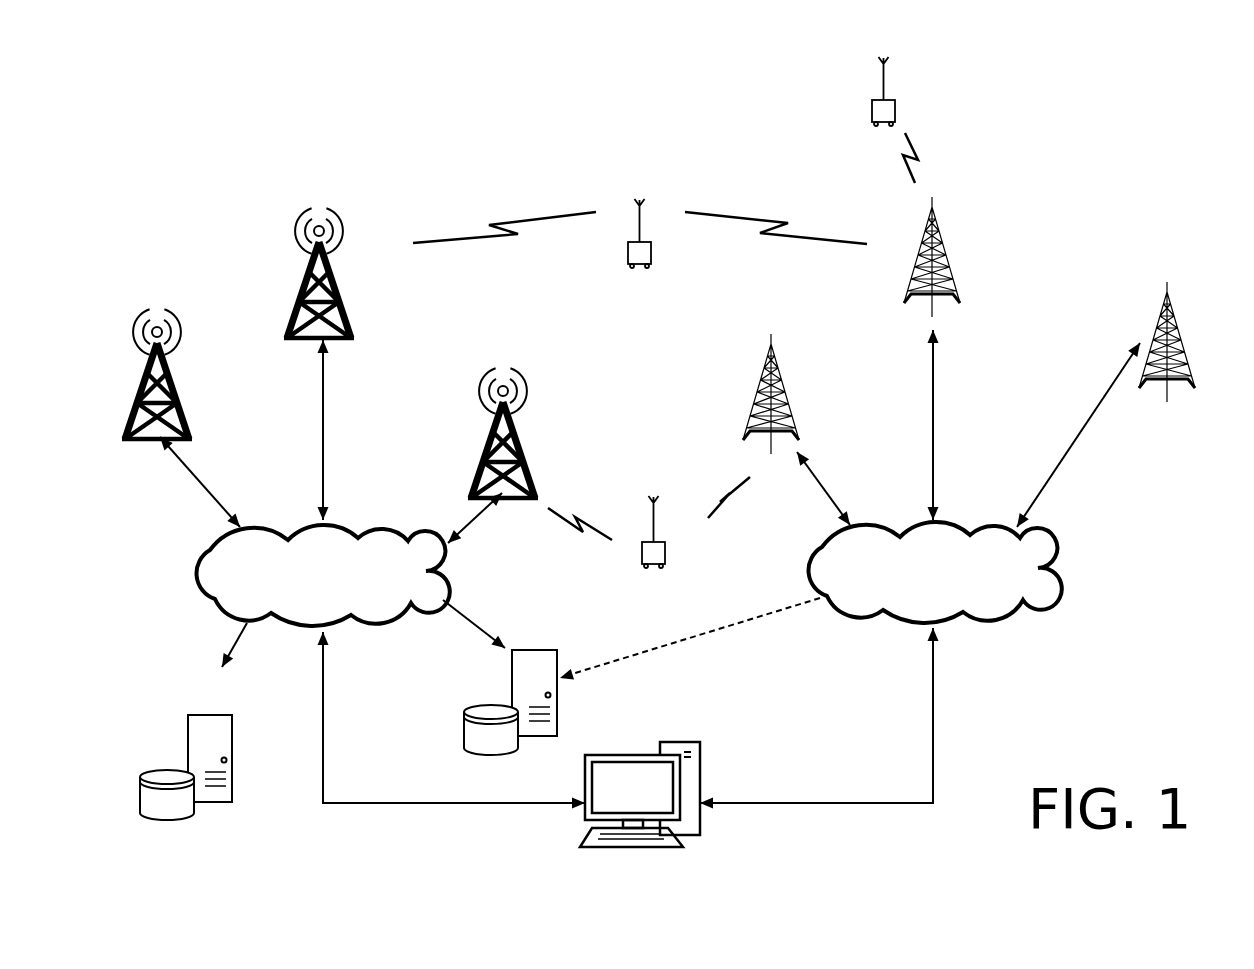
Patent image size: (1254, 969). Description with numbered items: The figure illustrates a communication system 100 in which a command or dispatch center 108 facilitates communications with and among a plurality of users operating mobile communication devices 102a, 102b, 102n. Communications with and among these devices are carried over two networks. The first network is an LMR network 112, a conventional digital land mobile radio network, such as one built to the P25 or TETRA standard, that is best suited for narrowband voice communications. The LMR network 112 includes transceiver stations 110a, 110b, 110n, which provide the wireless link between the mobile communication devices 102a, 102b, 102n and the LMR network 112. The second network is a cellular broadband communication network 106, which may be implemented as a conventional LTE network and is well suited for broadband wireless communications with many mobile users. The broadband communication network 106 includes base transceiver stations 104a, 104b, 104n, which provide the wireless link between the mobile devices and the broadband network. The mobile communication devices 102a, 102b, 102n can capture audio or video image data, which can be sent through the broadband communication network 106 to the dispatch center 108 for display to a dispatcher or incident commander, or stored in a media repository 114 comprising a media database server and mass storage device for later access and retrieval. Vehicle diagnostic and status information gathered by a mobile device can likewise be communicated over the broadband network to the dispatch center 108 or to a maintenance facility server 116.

The system 100 is at (440, 160).
The mobile communication device 102a is at (870, 118).
The mobile communication device 102b is at (627, 258).
The mobile communication device 102n is at (642, 547).
The base transceiver station 104a is at (180, 398).
The base transceiver station 104b is at (347, 315).
The base transceiver station 104n is at (530, 458).
The cellular broadband communication network 106 is at (315, 614).
The dispatch center 108 is at (622, 801).
The transceiver station 110a is at (790, 407).
The transceiver station 110b is at (953, 288).
The transceiver station 110n is at (1183, 353).
The LMR network 112 is at (921, 609).
The media repository 114 is at (522, 676).
The maintenance facility server 116 is at (197, 741).